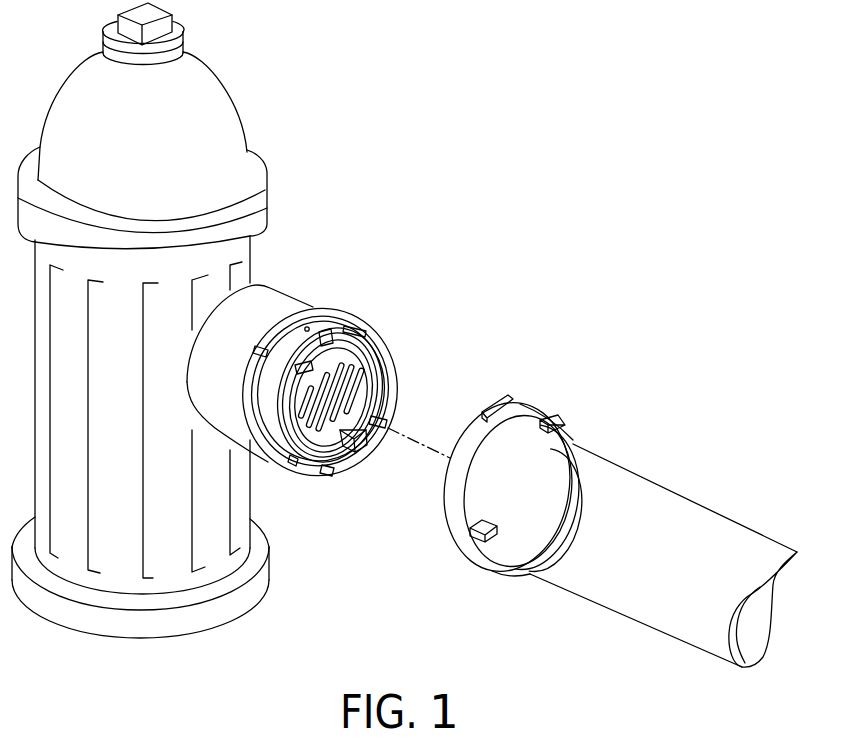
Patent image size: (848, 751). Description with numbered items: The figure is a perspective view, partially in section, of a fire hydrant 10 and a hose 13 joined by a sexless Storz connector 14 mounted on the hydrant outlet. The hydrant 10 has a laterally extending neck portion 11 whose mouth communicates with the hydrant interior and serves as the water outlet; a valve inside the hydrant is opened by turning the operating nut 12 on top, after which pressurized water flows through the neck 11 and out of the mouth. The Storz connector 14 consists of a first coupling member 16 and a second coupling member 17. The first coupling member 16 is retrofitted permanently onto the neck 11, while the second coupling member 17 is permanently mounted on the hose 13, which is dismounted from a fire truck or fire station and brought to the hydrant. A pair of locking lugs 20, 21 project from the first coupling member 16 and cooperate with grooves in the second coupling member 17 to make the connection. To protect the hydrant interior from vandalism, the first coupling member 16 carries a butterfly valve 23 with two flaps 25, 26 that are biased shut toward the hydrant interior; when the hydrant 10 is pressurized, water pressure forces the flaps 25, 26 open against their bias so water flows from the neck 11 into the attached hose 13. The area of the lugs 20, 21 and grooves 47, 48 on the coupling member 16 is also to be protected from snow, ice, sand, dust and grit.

The fire hydrant 10 is at (268, 247).
The neck portion 11 is at (275, 302).
The operating nut 12 is at (158, 25).
The hose 13 is at (640, 470).
The Storz connector 14 is at (465, 440).
The first coupling member 16 is at (352, 396).
The second coupling member 17 is at (535, 398).
The locking lug 20 is at (320, 338).
The locking lug 21 is at (378, 444).
The butterfly valve 23 is at (360, 365).
The flap 25 is at (302, 441).
The flap 26 is at (350, 446).
The groove 47 is at (330, 474).
The groove 48 is at (368, 324).